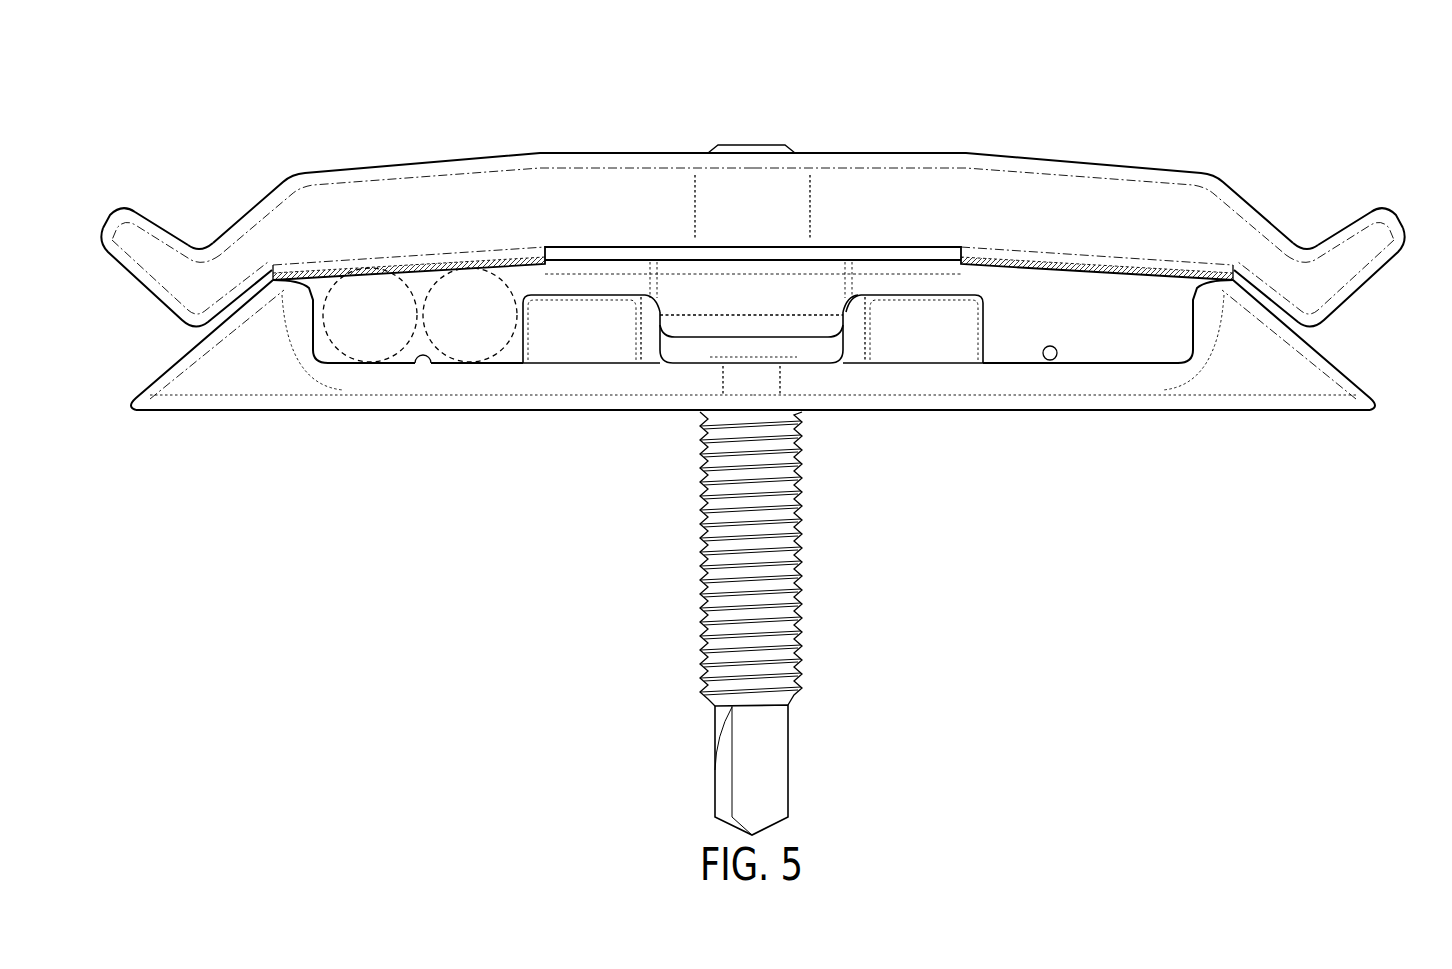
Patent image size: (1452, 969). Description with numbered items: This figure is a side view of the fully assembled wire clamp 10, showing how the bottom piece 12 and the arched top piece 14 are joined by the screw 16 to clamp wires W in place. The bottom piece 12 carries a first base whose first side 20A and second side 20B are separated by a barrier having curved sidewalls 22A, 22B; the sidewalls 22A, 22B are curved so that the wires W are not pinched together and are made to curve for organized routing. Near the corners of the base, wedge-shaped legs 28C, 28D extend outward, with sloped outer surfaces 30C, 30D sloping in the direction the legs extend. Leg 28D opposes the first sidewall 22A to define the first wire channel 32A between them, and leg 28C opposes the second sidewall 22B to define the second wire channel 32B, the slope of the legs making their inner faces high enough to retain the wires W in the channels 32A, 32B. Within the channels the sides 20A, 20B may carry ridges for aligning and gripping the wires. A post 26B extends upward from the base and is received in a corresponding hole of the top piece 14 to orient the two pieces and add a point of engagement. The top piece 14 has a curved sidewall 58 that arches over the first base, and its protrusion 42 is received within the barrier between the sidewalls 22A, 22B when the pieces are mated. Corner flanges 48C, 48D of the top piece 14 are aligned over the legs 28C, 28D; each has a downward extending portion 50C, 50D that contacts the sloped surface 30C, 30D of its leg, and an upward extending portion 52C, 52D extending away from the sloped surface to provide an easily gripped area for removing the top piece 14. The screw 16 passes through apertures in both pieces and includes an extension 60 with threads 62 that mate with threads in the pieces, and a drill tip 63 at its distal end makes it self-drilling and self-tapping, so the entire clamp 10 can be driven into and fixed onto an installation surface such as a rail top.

The wire clamp 10 is at (1322, 140).
The bottom piece 12 is at (1105, 392).
The top piece 14 is at (957, 180).
The screw 16 is at (752, 145).
The curved sidewall 58 is at (852, 205).
The first side 20A is at (427, 357).
The second side 20B is at (1047, 360).
The first sidewall 22A is at (620, 347).
The second sidewall 22B is at (903, 337).
The post 26B is at (773, 352).
The leg 28C is at (1317, 387).
The leg 28D is at (240, 377).
The sloped outer surface 30C is at (1340, 370).
The sloped outer surface 30D is at (160, 370).
The first wire channel 32A is at (513, 350).
The second wire channel 32B is at (1143, 327).
The protrusion 42 is at (703, 303).
The flange 48C is at (1222, 210).
The flange 48D is at (143, 243).
The downward extending portion 50C is at (1267, 260).
The downward extending portion 50D is at (247, 237).
The upward extending portion 52C is at (1377, 258).
The upward extending portion 52D is at (160, 289).
The extension 60 is at (787, 520).
The threads 62 is at (787, 640).
The drill tip 63 is at (780, 770).
The wires W is at (373, 330).